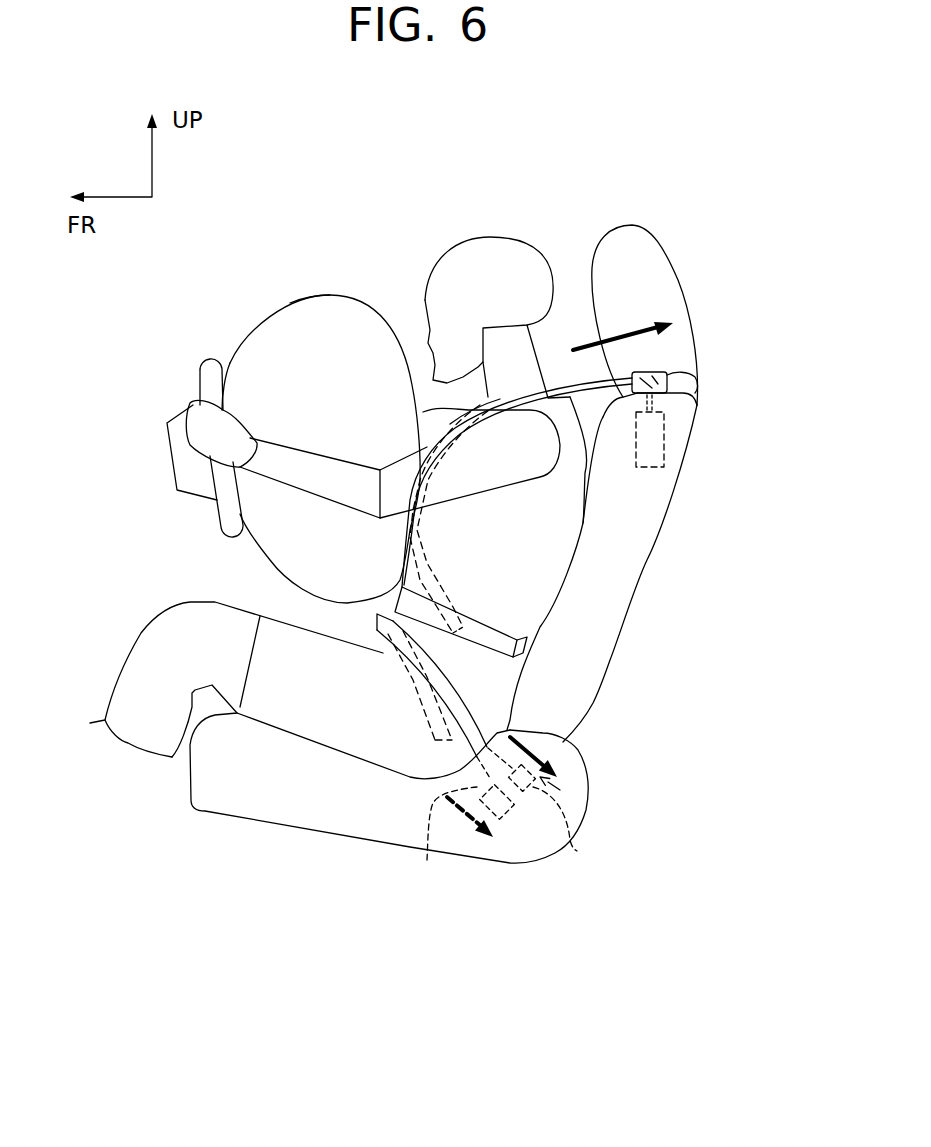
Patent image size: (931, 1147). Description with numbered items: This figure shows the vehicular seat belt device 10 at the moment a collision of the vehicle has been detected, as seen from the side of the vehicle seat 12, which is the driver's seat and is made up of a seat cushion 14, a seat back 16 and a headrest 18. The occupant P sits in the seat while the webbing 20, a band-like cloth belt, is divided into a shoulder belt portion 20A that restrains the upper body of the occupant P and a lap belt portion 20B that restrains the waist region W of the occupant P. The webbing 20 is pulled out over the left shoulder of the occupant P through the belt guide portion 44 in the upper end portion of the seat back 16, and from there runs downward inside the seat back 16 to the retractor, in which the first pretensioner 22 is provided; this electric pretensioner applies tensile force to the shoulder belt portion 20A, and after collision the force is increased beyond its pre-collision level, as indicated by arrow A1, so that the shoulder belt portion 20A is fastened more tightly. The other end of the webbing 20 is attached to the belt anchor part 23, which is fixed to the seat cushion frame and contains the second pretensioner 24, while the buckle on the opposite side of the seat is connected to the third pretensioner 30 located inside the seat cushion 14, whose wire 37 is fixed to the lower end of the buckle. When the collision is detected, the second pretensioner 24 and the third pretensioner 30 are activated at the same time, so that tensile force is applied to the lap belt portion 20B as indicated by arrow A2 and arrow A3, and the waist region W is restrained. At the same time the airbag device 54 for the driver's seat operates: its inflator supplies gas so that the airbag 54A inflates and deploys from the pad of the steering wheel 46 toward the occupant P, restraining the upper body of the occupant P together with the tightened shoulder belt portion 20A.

The vehicular seat belt device 10 is at (385, 293).
The vehicle seat 12 is at (660, 553).
The seat cushion 14 is at (303, 827).
The seat back 16 is at (603, 660).
The headrest 18 is at (678, 255).
The webbing 20 is at (556, 370).
The shoulder belt portion 20A is at (420, 408).
The lap belt portion 20B is at (383, 630).
The first pretensioner 22 is at (667, 445).
The belt anchor part 23 is at (541, 826).
The second pretensioner 24 is at (577, 851).
The third pretensioner 30 is at (511, 823).
The wire 37 is at (427, 860).
The belt guide portion 44 is at (680, 380).
The steering wheel 46 is at (206, 364).
The airbag device 54 is at (257, 312).
The airbag 54A is at (325, 293).
The occupant P is at (487, 227).
The waist region W is at (490, 683).
The arrow A1 is at (628, 400).
The arrow A2 is at (537, 750).
The arrow A3 is at (460, 803).